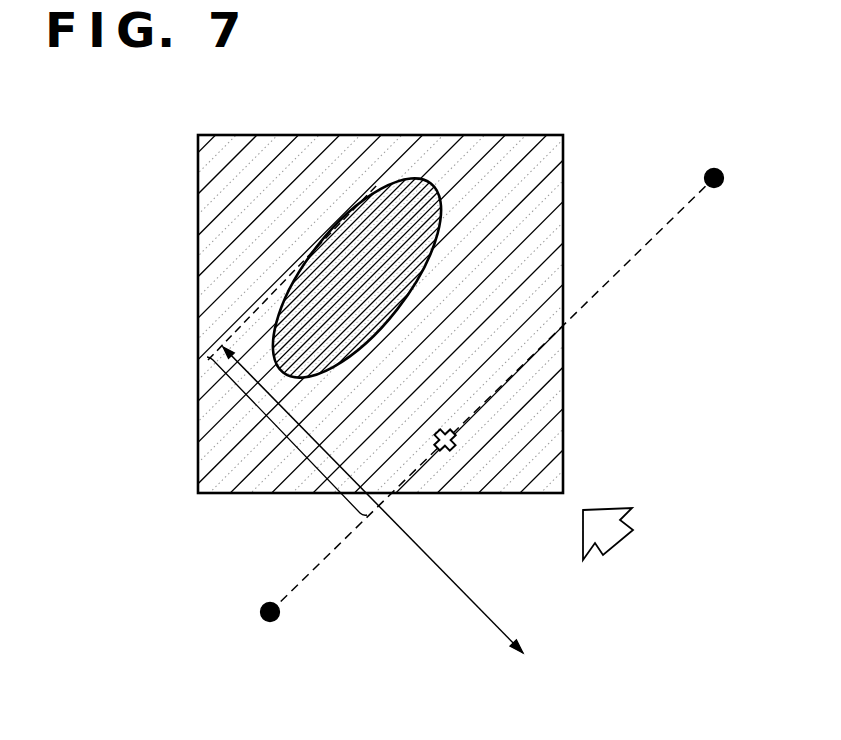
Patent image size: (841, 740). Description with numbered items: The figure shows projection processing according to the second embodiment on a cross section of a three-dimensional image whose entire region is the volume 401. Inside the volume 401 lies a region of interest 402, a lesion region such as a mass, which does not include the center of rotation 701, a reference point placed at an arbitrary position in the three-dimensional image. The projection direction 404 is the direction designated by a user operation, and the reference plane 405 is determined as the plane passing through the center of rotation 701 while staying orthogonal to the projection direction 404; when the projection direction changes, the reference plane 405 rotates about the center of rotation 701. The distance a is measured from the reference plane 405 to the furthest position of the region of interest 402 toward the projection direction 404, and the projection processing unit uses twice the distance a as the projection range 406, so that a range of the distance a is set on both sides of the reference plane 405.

The volume 401 is at (248, 160).
The region of interest 402 is at (405, 188).
The projection direction 404 is at (606, 507).
The reference plane 405 is at (705, 165).
The projection range 406 is at (460, 590).
The center of rotation 701 is at (450, 448).
The distance a is at (283, 438).